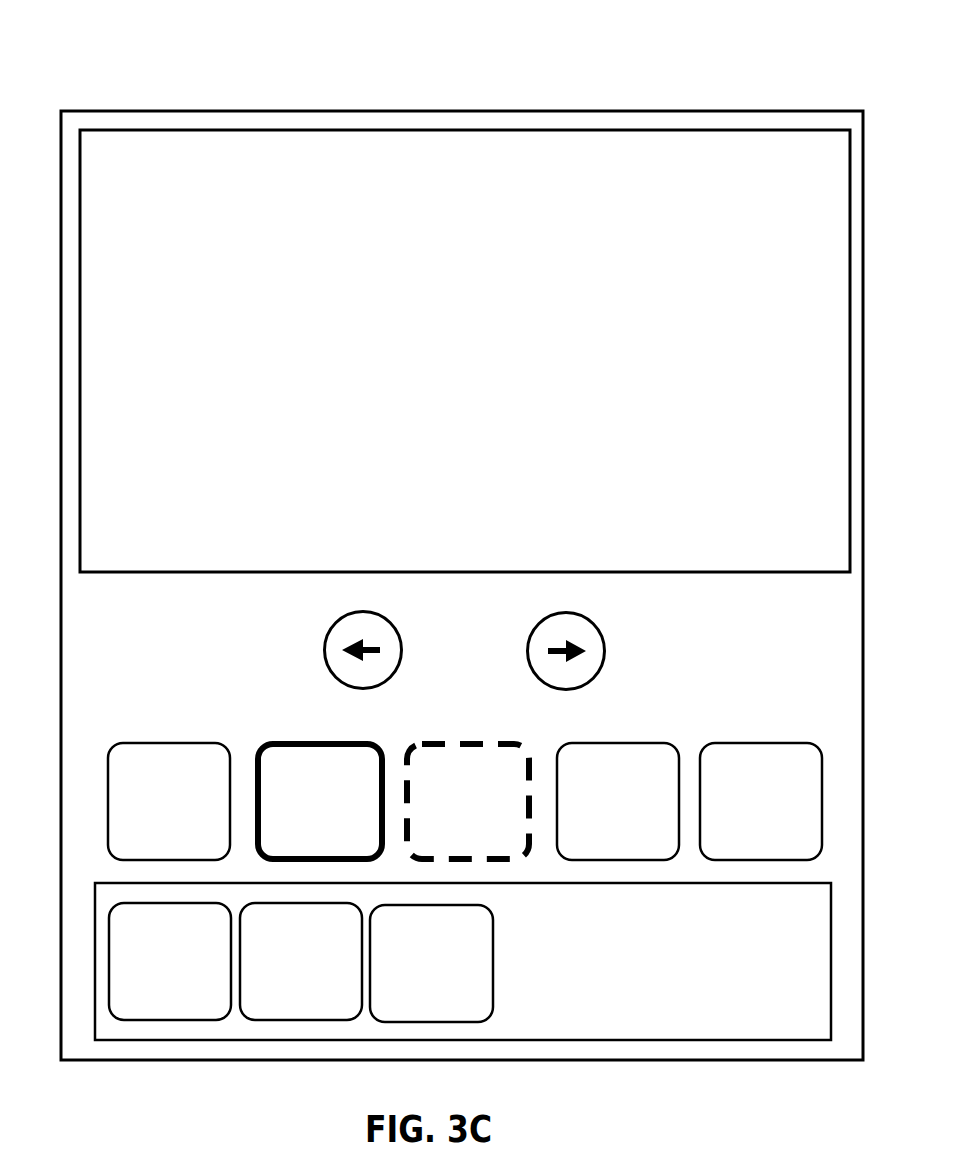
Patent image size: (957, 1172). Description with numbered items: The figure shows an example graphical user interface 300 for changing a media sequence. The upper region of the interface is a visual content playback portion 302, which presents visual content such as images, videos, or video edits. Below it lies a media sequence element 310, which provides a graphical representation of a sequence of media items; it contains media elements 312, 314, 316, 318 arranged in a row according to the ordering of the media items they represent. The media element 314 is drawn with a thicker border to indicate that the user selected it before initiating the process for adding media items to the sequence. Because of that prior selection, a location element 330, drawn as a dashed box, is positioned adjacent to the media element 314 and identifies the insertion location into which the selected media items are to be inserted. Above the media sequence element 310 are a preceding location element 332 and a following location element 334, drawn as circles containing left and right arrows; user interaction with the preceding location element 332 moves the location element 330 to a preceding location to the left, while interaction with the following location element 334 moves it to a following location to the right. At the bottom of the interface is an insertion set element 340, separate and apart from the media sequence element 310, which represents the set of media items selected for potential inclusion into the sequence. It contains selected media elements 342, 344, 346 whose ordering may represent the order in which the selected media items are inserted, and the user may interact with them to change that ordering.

The graphical user interface 300 is at (485, 111).
The visual content playback portion 302 is at (465, 351).
The media sequence element 310 is at (478, 720).
The media element 312 is at (169, 801).
The media element 314 is at (320, 801).
The media element 316 is at (618, 801).
The media element 318 is at (761, 801).
The location element 330 is at (468, 801).
The preceding location element 332 is at (362, 612).
The following location element 334 is at (567, 613).
The insertion set element 340 is at (463, 961).
The selected media element 342 is at (170, 961).
The selected media element 344 is at (301, 961).
The selected media element 346 is at (431, 963).